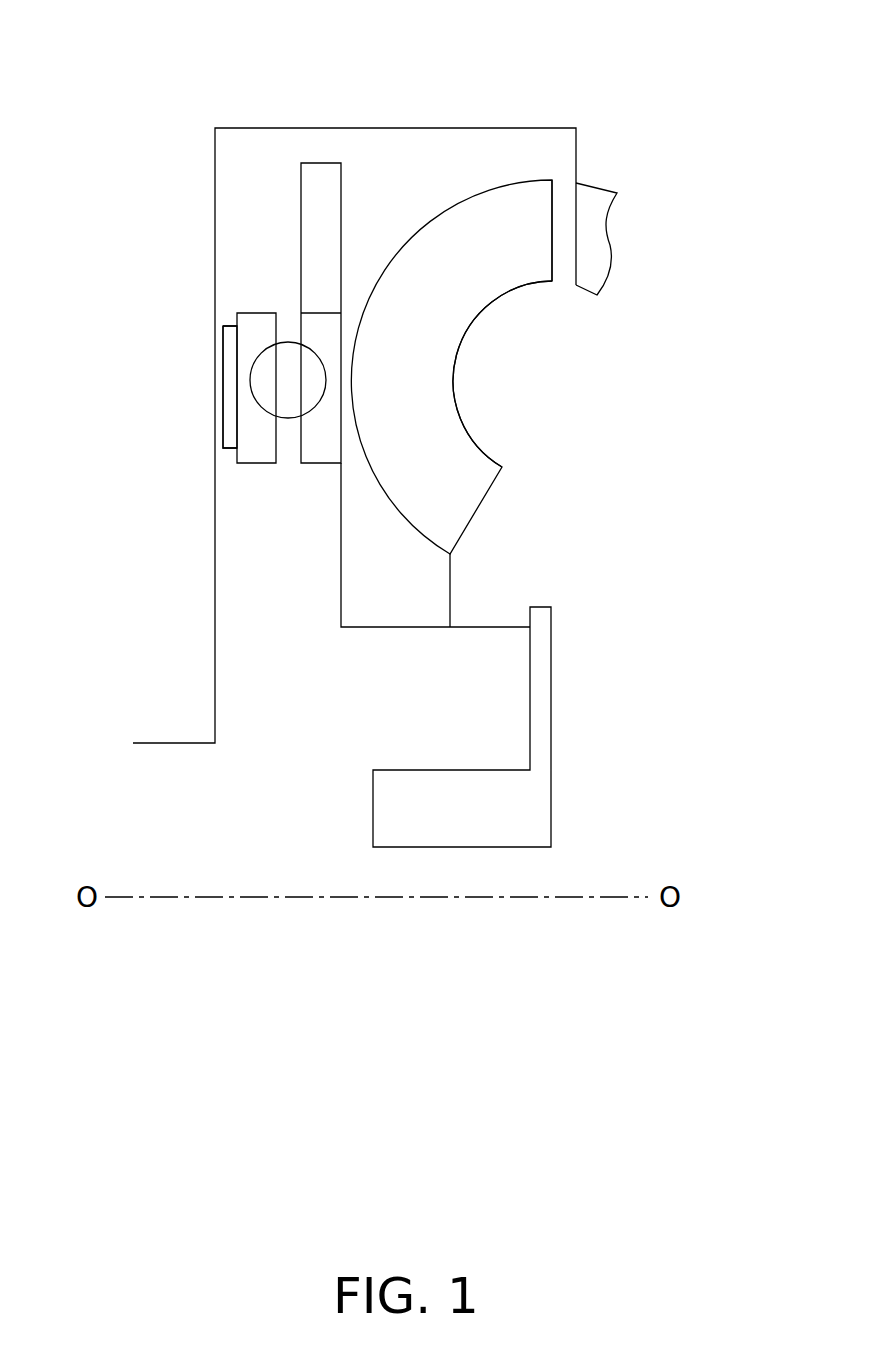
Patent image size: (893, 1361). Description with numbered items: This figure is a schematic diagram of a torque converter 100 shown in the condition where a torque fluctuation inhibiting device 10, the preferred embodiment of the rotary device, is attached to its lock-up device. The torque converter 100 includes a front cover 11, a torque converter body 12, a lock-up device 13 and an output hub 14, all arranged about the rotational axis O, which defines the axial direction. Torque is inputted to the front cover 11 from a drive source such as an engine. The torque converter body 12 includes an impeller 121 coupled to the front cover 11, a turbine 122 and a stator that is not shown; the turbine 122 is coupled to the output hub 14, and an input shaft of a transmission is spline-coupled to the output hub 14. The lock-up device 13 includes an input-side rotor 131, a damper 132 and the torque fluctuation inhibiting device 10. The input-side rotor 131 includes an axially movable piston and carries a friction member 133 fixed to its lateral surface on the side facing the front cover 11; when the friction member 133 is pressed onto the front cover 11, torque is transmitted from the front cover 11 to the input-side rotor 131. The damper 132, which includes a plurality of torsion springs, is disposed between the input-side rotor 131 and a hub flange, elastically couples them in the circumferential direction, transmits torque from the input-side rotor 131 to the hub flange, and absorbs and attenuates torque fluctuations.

The torque converter 100 is at (622, 98).
The torque fluctuation inhibiting device 10 is at (320, 160).
The front cover 11 is at (215, 168).
The torque converter body 12 is at (643, 185).
The impeller 121 is at (596, 255).
The turbine 122 is at (445, 358).
The lock-up device 13 is at (258, 513).
The input-side rotor 131 is at (257, 322).
The damper 132 is at (294, 437).
The friction member 133 is at (235, 392).
The output hub 14 is at (551, 695).